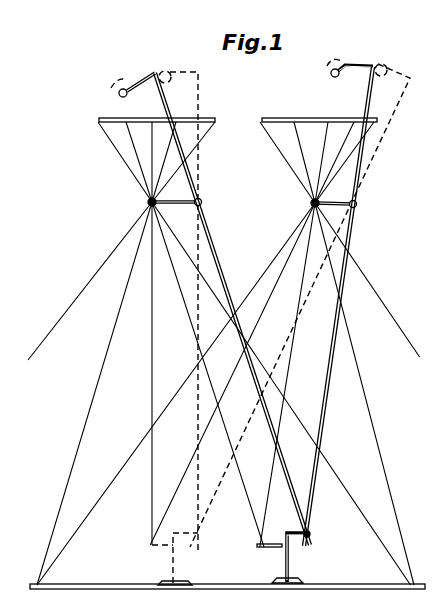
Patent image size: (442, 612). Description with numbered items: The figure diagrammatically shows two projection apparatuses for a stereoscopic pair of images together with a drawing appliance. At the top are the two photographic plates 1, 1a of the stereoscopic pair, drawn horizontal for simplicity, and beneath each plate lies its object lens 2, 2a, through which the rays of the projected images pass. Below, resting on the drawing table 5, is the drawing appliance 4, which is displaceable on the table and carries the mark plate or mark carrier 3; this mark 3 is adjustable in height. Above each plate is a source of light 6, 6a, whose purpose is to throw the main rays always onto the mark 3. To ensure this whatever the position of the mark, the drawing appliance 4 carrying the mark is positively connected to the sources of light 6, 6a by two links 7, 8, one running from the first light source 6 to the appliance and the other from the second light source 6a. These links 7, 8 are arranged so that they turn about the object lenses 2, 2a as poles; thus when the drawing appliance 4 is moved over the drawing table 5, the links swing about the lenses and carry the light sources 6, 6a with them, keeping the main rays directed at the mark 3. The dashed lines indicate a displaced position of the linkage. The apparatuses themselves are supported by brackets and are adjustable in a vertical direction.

The photographic plate 1 is at (112, 126).
The photographic plate 1a is at (281, 127).
The object lens 2 is at (146, 203).
The object lens 2a is at (311, 204).
The mark plate 3 is at (268, 549).
The drawing appliance 4 is at (290, 567).
The drawing table 5 is at (128, 590).
The source of light 6 is at (119, 94).
The source of light 6a is at (331, 75).
The link 7 is at (219, 263).
The link 8 is at (322, 422).